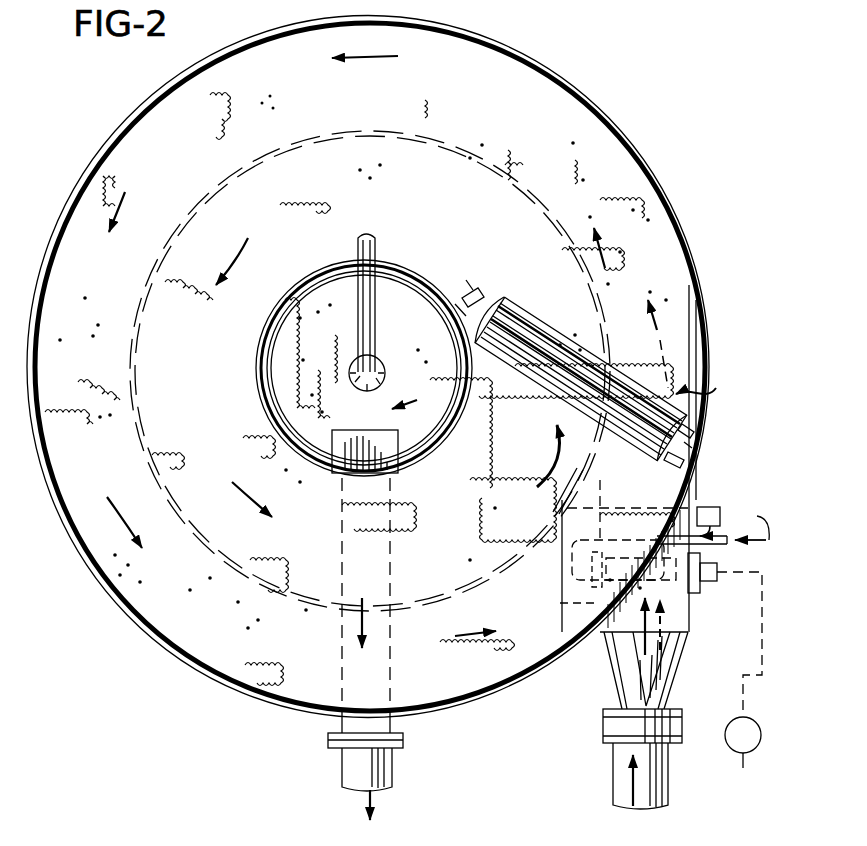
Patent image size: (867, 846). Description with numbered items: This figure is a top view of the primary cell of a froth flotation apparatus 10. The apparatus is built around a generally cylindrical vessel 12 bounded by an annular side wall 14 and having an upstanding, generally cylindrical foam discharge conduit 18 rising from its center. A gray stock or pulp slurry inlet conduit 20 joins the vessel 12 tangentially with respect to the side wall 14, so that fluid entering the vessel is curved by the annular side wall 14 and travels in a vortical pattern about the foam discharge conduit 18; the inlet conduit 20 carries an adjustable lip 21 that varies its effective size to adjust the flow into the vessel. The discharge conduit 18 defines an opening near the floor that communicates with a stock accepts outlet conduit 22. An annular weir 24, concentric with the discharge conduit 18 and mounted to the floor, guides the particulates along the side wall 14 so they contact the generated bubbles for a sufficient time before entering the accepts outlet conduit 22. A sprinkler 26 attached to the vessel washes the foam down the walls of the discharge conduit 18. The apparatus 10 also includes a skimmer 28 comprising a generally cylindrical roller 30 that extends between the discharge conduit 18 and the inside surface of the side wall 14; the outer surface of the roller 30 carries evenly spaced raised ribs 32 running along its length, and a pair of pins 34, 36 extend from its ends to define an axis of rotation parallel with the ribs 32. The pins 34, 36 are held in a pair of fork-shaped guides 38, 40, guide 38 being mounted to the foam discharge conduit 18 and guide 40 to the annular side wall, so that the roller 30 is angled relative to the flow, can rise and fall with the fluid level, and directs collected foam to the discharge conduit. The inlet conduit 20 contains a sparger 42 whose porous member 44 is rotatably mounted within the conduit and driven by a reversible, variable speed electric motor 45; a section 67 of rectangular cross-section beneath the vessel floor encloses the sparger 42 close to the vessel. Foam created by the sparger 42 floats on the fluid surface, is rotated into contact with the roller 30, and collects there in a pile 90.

The froth flotation apparatus 10 is at (532, 50).
The vessel 12 is at (444, 44).
The annular side wall 14 is at (642, 170).
The foam discharge conduit 18 is at (413, 268).
The inlet conduit 20 is at (668, 772).
The adjustable lip 21 is at (733, 520).
The stock accepts outlet conduit 22 is at (358, 436).
The annular weir 24 is at (418, 127).
The sprinkler 26 is at (358, 248).
The skimmer 28 is at (709, 377).
The roller 30 is at (516, 306).
The raised ribs 32 is at (698, 428).
The pin 34 is at (462, 298).
The pin 36 is at (686, 459).
The guide 38 is at (452, 332).
The guide 40 is at (692, 502).
The sparger 42 is at (699, 610).
The porous member 44 is at (686, 639).
The electric motor 45 is at (743, 759).
The section 67 is at (590, 609).
The pile 90 is at (594, 457).